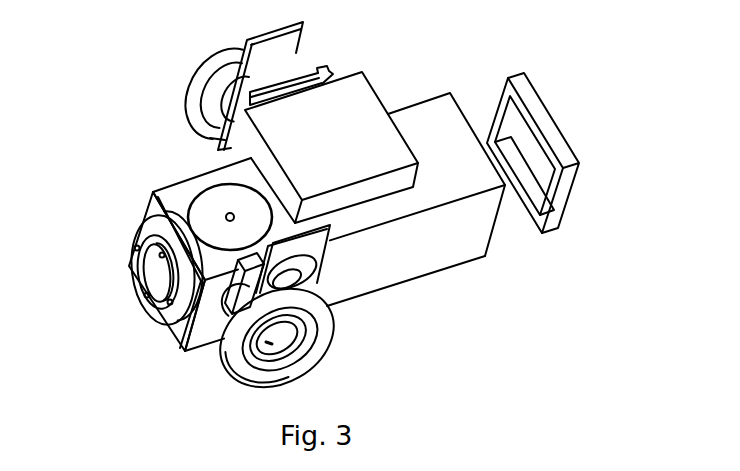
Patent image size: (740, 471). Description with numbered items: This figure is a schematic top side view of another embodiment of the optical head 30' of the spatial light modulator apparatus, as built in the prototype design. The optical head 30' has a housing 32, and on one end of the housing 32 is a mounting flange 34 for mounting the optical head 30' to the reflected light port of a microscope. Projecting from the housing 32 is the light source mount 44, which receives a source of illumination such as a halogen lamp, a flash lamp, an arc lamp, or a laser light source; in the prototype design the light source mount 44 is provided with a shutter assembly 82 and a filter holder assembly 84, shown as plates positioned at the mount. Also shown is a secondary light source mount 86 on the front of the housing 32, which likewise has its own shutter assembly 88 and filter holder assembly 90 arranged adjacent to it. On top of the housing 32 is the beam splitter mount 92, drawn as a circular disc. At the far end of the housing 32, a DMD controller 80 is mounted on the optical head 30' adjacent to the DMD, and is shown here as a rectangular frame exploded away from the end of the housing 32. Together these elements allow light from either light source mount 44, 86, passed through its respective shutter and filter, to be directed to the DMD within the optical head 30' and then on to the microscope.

The optical head 30' is at (392, 196).
The housing 32 is at (158, 190).
The mounting flange 34 is at (132, 273).
The light source mount 44 is at (197, 96).
The DMD controller 80 is at (568, 140).
The shutter assembly 82 is at (243, 42).
The filter holder assembly 84 is at (318, 73).
The secondary light source mount 86 is at (315, 357).
The shutter assembly 88 is at (307, 287).
The filter holder assembly 90 is at (212, 339).
The beam splitter mount 92 is at (213, 200).